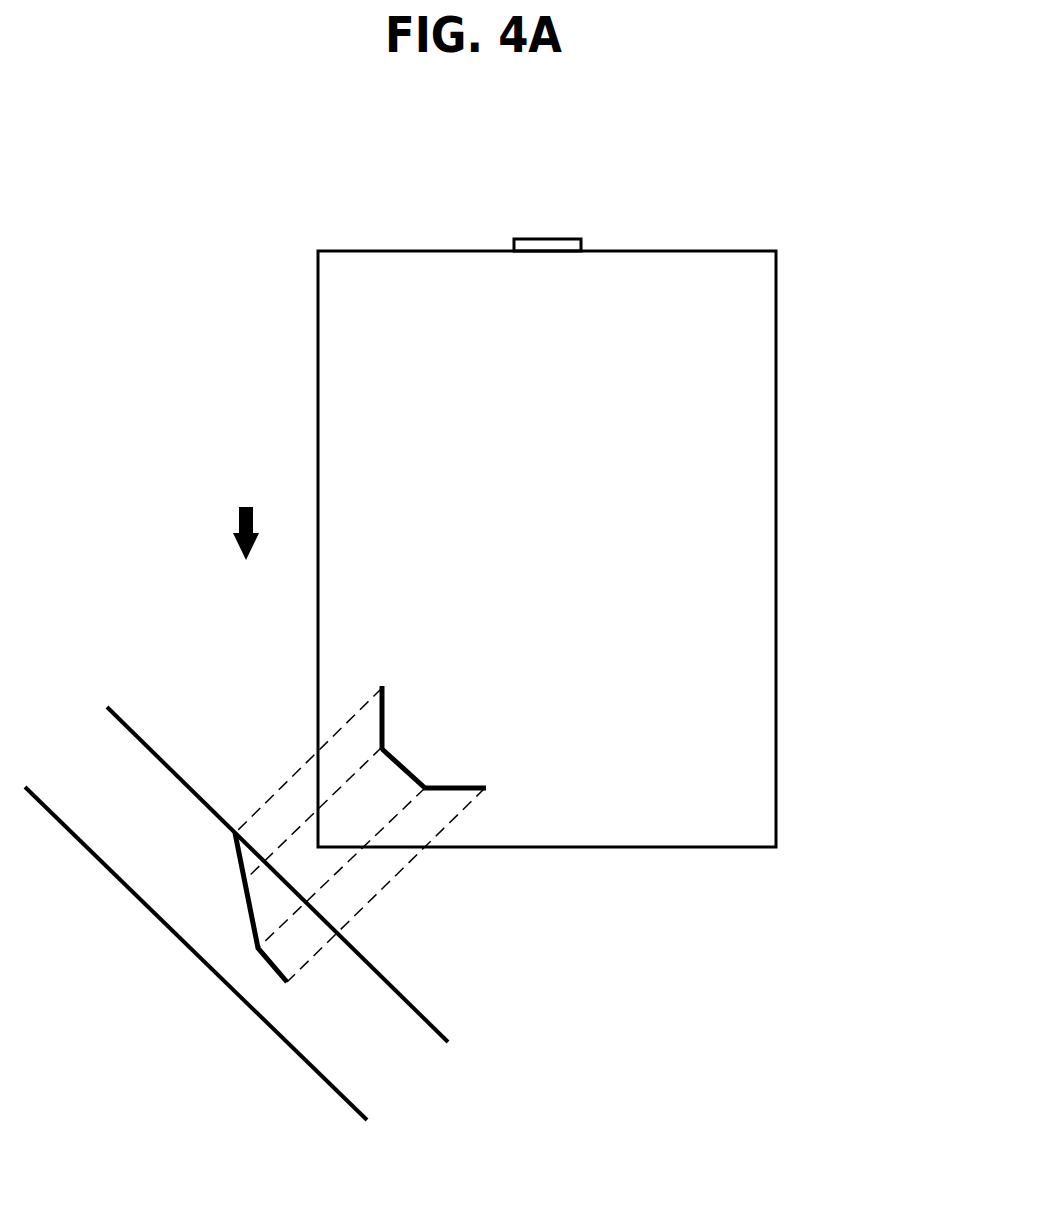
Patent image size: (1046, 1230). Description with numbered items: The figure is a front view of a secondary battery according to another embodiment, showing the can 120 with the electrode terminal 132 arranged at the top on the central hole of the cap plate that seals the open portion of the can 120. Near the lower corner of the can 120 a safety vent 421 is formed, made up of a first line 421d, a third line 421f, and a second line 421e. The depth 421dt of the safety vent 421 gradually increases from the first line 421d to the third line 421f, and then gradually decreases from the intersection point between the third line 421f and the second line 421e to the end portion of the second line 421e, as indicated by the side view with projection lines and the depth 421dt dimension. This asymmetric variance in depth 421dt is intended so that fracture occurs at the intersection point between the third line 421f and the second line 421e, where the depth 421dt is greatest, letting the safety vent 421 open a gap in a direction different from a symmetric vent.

The can 120 is at (738, 513).
The electrode terminal 132 is at (546, 239).
The safety vent 421 is at (466, 838).
The first line 421d is at (380, 735).
The third line 421f is at (415, 782).
The second line 421e is at (467, 791).
The depth 421dt is at (177, 779).